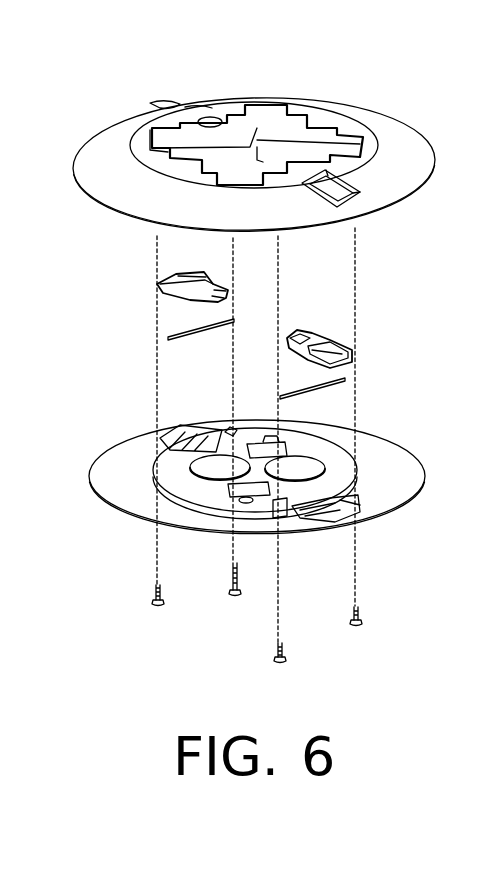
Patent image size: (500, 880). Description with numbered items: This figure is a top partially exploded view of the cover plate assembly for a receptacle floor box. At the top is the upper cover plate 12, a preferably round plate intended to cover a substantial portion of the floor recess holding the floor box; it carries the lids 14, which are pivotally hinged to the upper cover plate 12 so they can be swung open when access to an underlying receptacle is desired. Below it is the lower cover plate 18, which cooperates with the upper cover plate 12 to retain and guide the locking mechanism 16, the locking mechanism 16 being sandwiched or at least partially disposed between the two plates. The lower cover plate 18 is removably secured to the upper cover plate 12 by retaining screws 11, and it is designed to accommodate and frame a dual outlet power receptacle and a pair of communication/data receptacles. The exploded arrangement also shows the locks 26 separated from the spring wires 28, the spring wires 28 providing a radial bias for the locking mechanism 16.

The retaining screws 11 is at (290, 650).
The upper cover plate 12 is at (110, 123).
The lids 14 is at (278, 127).
The locking mechanism 16 is at (342, 324).
The lower cover plate 18 is at (416, 464).
The locks 26 is at (173, 293).
The spring wires 28 is at (205, 334).